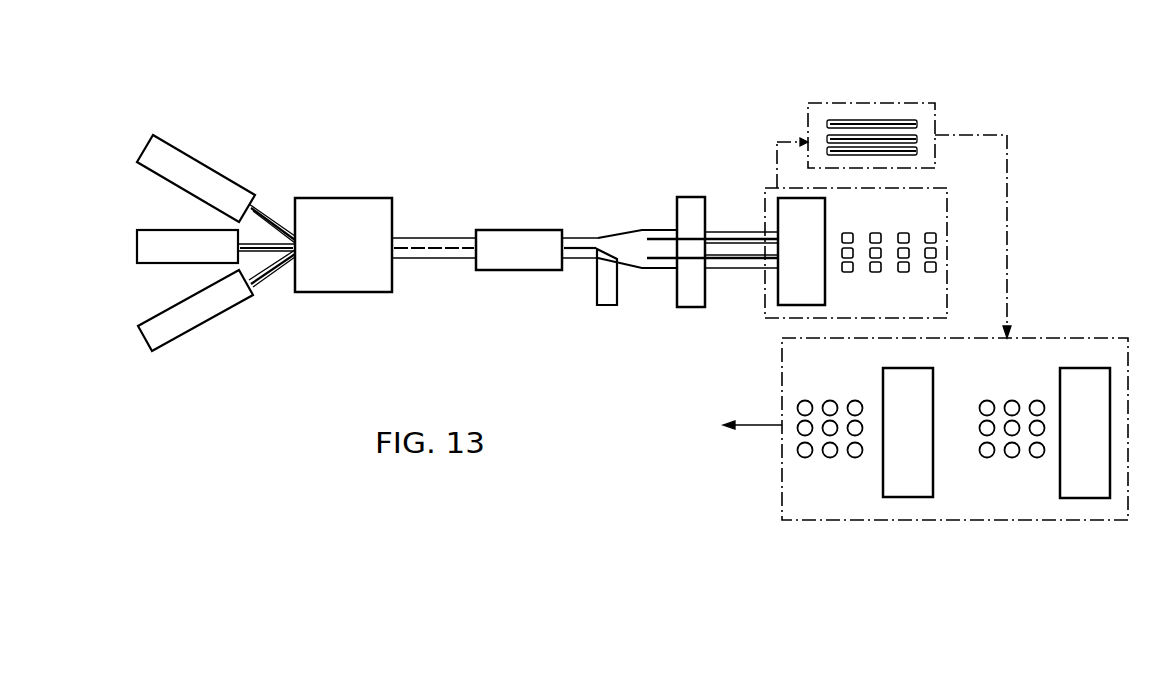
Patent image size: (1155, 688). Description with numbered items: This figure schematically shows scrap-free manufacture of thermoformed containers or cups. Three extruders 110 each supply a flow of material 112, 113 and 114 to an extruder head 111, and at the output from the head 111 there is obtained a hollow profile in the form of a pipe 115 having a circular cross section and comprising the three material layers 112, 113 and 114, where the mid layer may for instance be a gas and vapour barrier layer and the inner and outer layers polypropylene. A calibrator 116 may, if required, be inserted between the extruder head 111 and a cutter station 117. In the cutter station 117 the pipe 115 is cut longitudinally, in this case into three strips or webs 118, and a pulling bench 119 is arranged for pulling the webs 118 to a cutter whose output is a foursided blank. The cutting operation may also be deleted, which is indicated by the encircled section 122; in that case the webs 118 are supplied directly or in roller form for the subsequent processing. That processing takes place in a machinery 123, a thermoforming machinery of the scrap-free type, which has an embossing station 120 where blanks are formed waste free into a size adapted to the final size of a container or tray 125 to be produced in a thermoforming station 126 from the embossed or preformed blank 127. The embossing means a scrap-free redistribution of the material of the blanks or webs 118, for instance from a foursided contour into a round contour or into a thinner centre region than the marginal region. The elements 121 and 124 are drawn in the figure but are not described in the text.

The extruders 110 is at (178, 157).
The extruder head 111 is at (333, 210).
The flow of material 112 is at (263, 218).
The flow of material 113 is at (235, 248).
The flow of material 114 is at (267, 273).
The pipe 115 is at (415, 240).
The calibrator 116 is at (510, 233).
The cutter station 117 is at (598, 297).
The webs 118 is at (748, 267).
The pulling bench 119 is at (677, 203).
The embossing station 120 is at (823, 218).
The detectors 121 is at (878, 233).
The encircled section 122 is at (910, 100).
The machinery 123 is at (891, 522).
The output unit 124 is at (1068, 370).
The container or tray 125 is at (834, 421).
The thermoforming station 126 is at (933, 388).
The embossed or preformed blank 127 is at (990, 421).